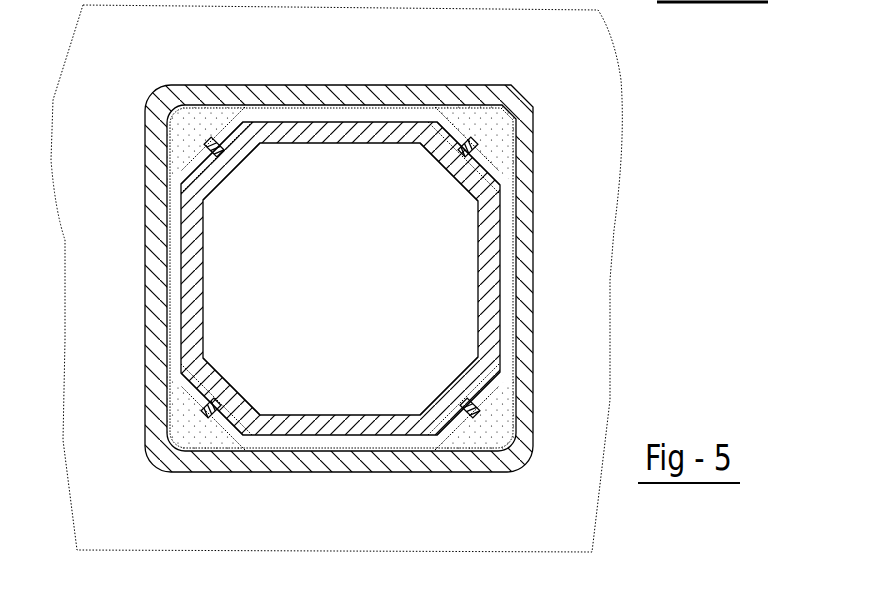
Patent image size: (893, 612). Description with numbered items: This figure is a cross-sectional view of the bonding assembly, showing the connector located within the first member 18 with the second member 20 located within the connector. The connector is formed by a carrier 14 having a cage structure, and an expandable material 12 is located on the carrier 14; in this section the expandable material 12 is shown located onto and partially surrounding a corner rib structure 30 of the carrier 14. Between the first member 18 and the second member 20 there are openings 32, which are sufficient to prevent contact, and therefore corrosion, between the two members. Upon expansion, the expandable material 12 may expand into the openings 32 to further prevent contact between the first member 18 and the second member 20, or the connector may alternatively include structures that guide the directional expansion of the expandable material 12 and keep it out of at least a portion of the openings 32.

The expandable material 12 is at (186, 121).
The carrier 14 is at (340, 279).
The first member 18 is at (360, 87).
The second member 20 is at (190, 278).
The corner rib structure 30 is at (458, 140).
The openings 32 is at (310, 113).